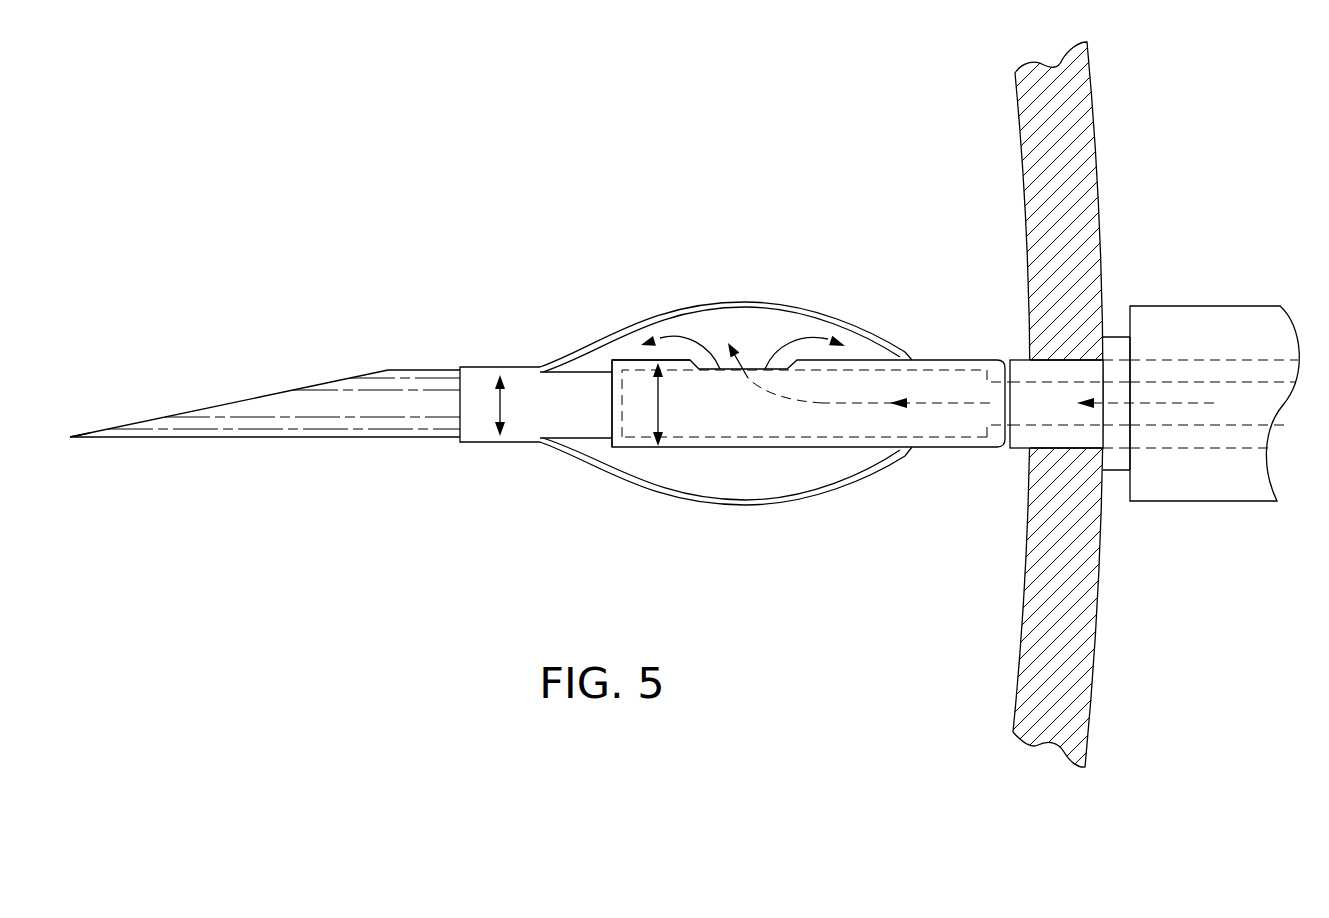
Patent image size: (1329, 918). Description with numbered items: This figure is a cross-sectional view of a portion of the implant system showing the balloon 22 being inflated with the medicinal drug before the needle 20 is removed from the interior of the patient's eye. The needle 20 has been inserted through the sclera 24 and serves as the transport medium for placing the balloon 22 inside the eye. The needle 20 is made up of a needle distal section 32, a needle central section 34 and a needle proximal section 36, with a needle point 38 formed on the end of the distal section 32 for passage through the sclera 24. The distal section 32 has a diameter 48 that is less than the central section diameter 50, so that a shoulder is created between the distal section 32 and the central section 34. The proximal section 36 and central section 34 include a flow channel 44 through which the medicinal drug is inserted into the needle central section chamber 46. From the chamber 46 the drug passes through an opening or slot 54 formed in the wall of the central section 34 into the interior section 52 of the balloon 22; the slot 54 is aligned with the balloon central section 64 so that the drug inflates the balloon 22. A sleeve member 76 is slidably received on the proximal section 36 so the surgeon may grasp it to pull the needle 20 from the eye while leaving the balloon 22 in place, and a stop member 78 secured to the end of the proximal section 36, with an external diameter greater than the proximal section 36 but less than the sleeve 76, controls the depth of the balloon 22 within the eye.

The needle 20 is at (390, 463).
The balloon 22 is at (775, 373).
The sclera 24 is at (1093, 140).
The needle distal section 32 is at (476, 368).
The needle central section 34 is at (622, 360).
The needle proximal section 36 is at (1060, 357).
The needle point 38 is at (70, 435).
The flow channel 44 is at (1060, 423).
The needle central section chamber 46 is at (858, 420).
The needle distal section diameter 48 is at (500, 412).
The needle central section diameter 50 is at (658, 420).
The balloon interior section 52 is at (777, 332).
The opening or slot 54 is at (733, 368).
The balloon central section 64 is at (738, 302).
The sleeve member 76 is at (1203, 306).
The stop member 78 is at (1114, 473).